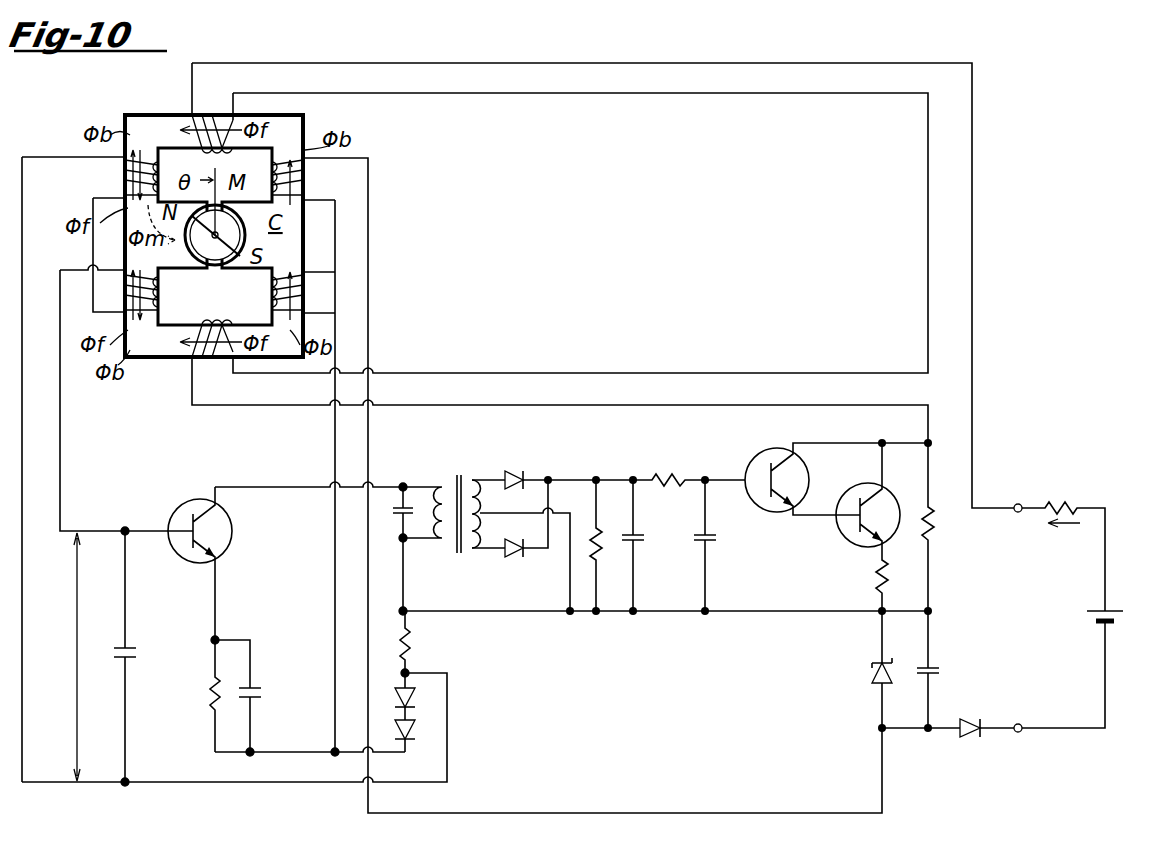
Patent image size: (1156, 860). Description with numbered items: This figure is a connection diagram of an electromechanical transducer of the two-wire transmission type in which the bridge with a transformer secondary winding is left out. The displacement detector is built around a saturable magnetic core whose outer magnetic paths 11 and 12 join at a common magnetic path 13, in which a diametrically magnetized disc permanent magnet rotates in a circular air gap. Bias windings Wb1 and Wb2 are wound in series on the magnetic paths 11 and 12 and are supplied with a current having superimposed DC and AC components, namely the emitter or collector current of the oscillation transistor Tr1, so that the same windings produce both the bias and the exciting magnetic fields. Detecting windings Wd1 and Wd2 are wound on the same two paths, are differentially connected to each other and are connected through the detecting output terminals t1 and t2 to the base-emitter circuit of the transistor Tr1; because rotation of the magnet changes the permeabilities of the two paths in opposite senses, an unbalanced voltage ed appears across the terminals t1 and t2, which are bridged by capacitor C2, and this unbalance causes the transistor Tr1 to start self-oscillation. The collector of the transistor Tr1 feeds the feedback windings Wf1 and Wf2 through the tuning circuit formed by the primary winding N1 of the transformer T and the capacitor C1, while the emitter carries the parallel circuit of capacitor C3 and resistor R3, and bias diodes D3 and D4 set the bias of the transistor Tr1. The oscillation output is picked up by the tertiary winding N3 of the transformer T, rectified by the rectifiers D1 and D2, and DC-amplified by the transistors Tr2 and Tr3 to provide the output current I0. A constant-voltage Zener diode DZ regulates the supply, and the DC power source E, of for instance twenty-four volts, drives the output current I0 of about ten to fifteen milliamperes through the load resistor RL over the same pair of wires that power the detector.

The magnetic path 11 is at (142, 118).
The magnetic path 12 is at (155, 352).
The common magnetic path 13 is at (222, 265).
The feedback winding Wf1 is at (211, 118).
The feedback winding Wf2 is at (211, 360).
The detecting winding Wd1 is at (117, 178).
The detecting winding Wd2 is at (171, 296).
The bias winding Wb1 is at (316, 178).
The bias winding Wb2 is at (316, 293).
The oscillation transistor Tr1 is at (178, 512).
The transistor Tr2 is at (750, 462).
The transistor Tr3 is at (842, 492).
The capacitor C1 is at (394, 549).
The capacitor C2 is at (139, 656).
The capacitor C3 is at (253, 698).
The resistor R3 is at (199, 694).
The transformer T is at (456, 500).
The primary winding N1 is at (422, 500).
The tertiary winding N3 is at (516, 545).
The rectifier D1 is at (510, 467).
The rectifier D2 is at (510, 535).
The bias diode D3 is at (422, 665).
The bias diode D4 is at (422, 736).
The constant-voltage Zener diode DZ is at (874, 672).
The load resistor RL is at (1063, 544).
The output current I0 is at (1064, 538).
The DC power source E is at (1117, 622).
The detecting output terminal t1 is at (121, 518).
The detecting output terminal t2 is at (121, 794).
The unbalanced voltage ed is at (72, 657).